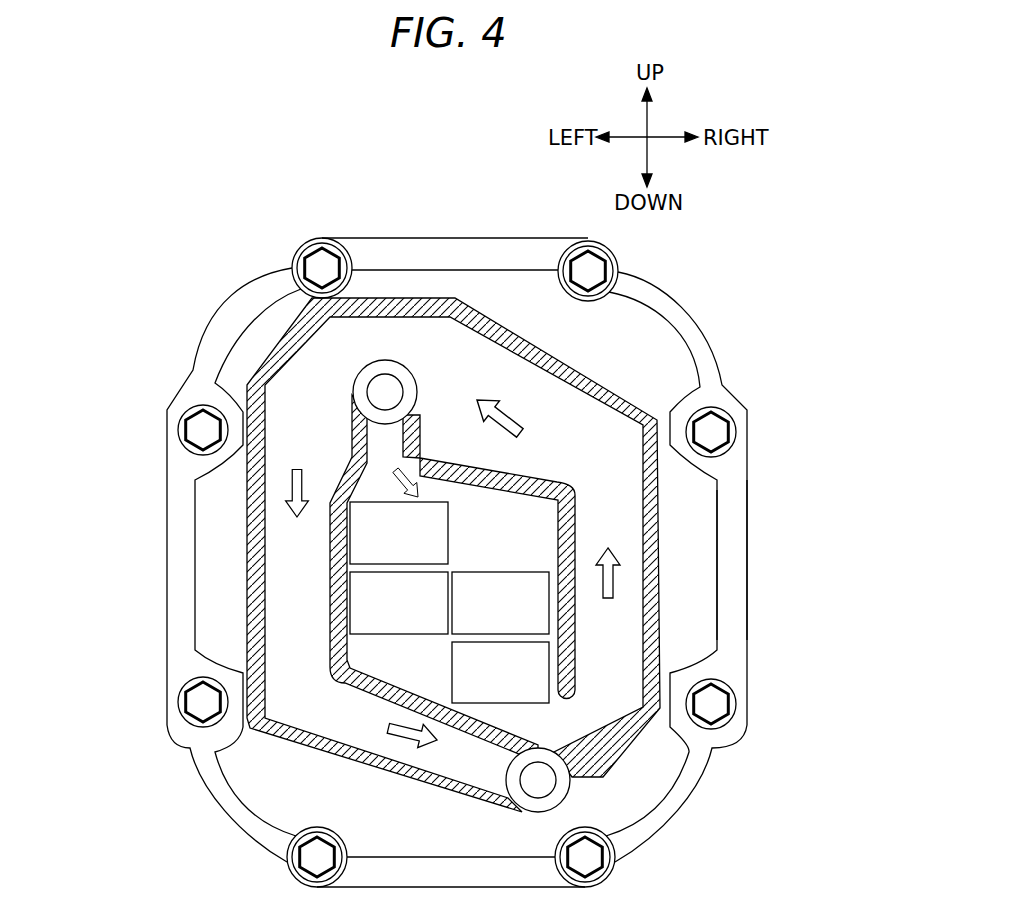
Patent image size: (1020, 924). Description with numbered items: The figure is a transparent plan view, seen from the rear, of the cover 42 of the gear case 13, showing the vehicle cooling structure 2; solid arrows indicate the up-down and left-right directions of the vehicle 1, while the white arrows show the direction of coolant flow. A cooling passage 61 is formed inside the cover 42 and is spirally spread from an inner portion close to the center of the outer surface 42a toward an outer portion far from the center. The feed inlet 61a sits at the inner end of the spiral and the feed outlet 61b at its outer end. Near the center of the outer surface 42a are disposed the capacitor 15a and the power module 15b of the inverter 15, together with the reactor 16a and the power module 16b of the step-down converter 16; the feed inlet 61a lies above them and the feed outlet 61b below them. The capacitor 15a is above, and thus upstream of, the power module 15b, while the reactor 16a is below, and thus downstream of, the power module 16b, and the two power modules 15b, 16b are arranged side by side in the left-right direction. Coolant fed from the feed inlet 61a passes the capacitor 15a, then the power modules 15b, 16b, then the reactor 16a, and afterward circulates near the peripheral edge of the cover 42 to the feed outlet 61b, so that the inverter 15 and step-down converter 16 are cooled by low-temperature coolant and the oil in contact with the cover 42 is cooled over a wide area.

The vehicle 1 is at (468, 195).
The vehicle cooling structure 2 is at (537, 222).
The gear case 13 is at (693, 298).
The cover 42 is at (718, 343).
The outer surface 42a is at (707, 540).
The cooling passage 61 is at (589, 466).
The feed inlet 61a is at (388, 378).
The feed outlet 61b is at (547, 782).
The inverter 15 is at (245, 568).
The capacitor 15a is at (350, 530).
The power module 15b is at (350, 604).
The step-down converter 16 is at (652, 637).
The reactor 16a is at (549, 670).
The power module 16b is at (549, 605).